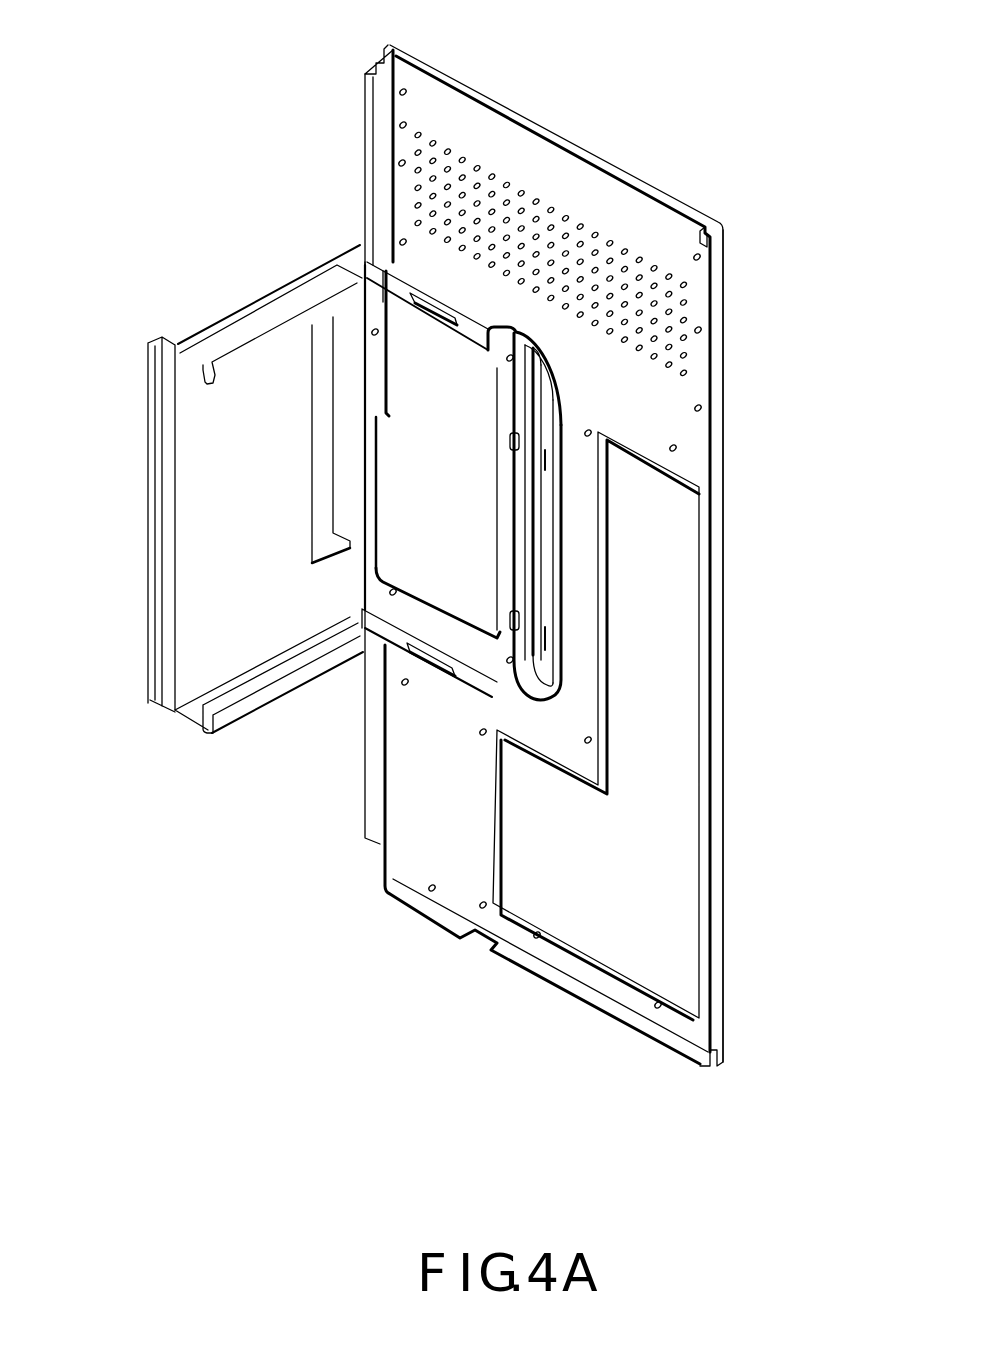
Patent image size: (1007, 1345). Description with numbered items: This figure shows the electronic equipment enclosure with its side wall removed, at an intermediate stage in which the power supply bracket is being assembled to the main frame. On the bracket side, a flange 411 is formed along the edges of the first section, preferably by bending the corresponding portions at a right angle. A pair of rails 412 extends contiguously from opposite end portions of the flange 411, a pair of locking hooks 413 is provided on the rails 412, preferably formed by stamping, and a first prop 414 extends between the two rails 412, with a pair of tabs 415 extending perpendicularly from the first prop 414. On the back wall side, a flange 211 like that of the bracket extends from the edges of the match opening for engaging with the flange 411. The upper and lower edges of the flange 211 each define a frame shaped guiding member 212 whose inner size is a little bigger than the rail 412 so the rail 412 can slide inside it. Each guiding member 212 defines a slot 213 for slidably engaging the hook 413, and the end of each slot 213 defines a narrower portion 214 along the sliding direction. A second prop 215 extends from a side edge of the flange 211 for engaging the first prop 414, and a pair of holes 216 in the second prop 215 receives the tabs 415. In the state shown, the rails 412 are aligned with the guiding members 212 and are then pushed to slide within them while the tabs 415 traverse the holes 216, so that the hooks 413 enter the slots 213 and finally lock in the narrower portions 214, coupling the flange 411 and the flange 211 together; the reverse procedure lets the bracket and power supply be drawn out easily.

The flange 211 is at (560, 365).
The guiding member 212 is at (657, 182).
The slot 213 is at (424, 312).
The narrower portion 214 is at (489, 331).
The second prop 215 is at (553, 572).
The hole 216 is at (545, 460).
The flange 411 is at (484, 333).
The rail 412 is at (401, 165).
The locking hook 413 is at (457, 323).
The first prop 414 is at (540, 425).
The tab 415 is at (522, 445).